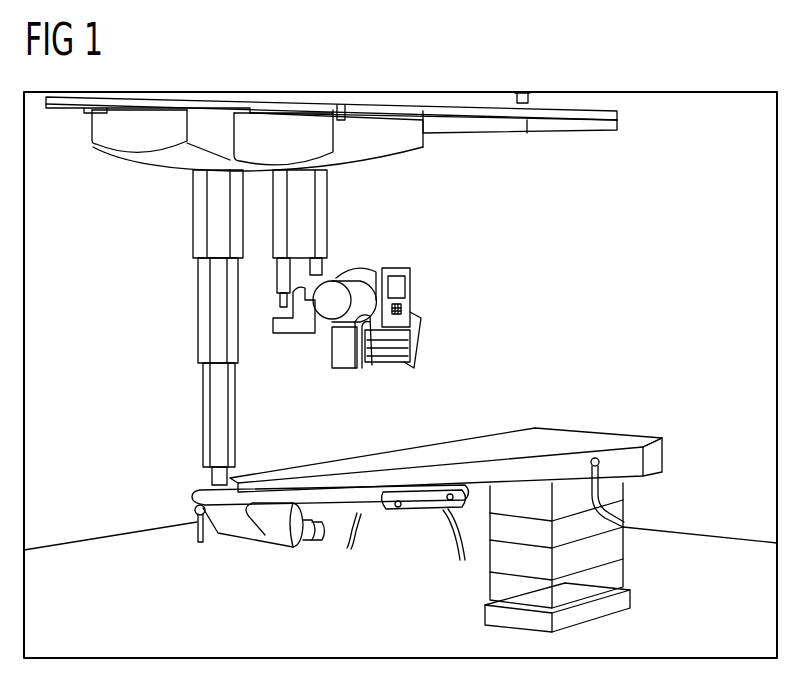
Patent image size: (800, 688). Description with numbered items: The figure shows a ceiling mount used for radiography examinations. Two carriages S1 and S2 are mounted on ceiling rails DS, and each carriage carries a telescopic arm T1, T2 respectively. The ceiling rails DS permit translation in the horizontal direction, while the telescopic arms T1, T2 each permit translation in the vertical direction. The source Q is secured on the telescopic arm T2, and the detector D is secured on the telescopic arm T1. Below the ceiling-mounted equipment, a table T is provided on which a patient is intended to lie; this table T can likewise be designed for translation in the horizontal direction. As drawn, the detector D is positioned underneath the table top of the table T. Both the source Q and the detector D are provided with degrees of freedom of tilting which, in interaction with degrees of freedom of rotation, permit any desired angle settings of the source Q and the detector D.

The ceiling rails DS is at (472, 118).
The carriage S1 is at (118, 137).
The carriage S2 is at (385, 145).
The telescopic arm T1 is at (202, 305).
The telescopic arm T2 is at (322, 224).
The source Q is at (418, 335).
The table T is at (632, 467).
The detector D is at (250, 535).